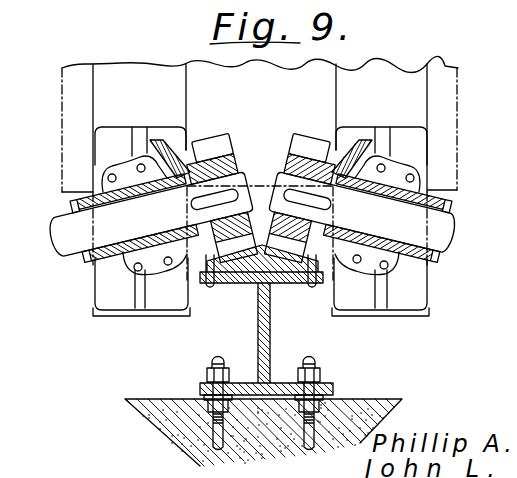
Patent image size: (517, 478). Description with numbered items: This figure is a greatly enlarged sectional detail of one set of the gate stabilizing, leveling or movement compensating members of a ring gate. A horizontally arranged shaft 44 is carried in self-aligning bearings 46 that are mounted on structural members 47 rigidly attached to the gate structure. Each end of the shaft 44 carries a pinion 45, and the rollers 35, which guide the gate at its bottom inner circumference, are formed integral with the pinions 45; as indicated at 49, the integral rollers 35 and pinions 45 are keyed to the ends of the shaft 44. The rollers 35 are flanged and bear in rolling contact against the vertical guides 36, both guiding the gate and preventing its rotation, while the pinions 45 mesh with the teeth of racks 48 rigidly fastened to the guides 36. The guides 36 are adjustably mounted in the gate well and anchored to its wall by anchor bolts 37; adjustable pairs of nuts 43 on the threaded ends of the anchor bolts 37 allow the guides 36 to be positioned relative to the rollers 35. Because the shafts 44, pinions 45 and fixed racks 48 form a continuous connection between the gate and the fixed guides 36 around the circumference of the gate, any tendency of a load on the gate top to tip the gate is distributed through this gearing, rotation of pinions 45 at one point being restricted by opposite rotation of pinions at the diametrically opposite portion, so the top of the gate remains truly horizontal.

The rollers 35 is at (174, 136).
The vertical guides 36 is at (268, 333).
The anchor bolts 37 is at (280, 462).
The adjustable pairs of nuts 43 is at (202, 393).
The shafts 44 is at (68, 232).
The pinion 45 is at (292, 153).
The self-aligning bearings 46 is at (120, 258).
The structural members 47 is at (112, 108).
The racks 48 is at (249, 266).
The key 49 is at (218, 192).